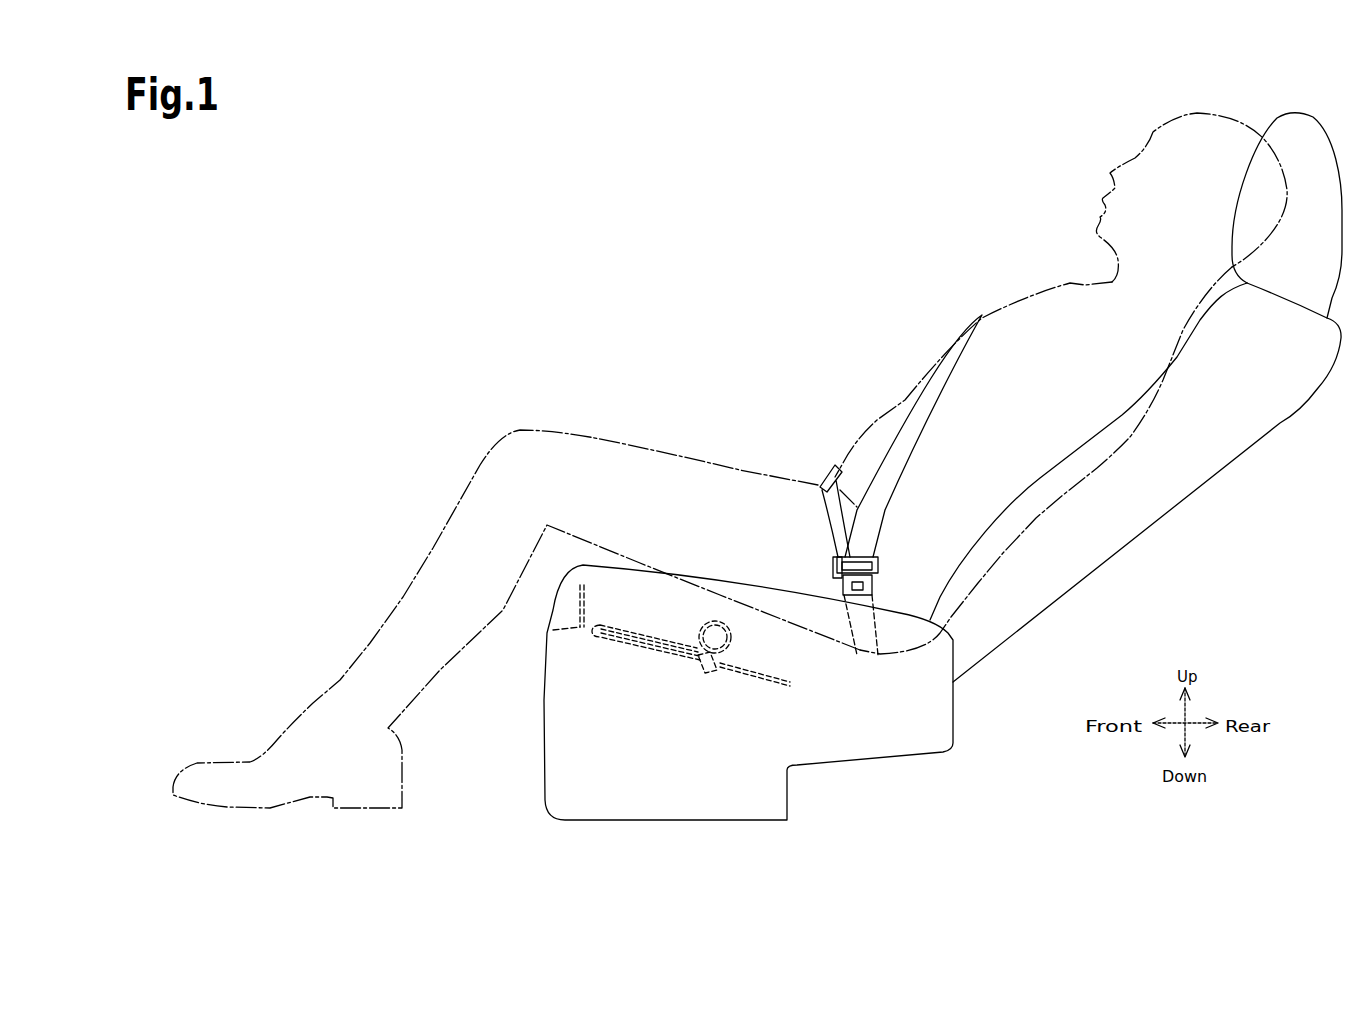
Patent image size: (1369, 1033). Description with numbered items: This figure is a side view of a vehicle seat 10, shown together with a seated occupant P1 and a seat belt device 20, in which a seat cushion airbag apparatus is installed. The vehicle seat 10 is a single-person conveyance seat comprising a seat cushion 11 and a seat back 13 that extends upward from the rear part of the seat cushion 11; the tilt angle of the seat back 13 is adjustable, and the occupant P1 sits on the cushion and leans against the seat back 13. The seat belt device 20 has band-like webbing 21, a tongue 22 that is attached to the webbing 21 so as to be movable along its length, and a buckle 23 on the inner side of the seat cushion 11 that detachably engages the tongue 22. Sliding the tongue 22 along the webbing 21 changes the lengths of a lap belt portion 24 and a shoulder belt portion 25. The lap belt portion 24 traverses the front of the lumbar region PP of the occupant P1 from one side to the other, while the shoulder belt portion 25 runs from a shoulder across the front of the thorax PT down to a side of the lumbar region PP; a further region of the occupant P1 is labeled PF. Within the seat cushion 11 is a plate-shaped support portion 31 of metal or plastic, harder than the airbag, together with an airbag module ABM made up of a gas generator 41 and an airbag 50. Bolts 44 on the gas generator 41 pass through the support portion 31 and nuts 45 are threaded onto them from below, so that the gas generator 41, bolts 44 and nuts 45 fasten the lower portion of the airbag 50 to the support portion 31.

The vehicle seat 10 is at (914, 466).
The seat cushion 11 is at (543, 735).
The seat back 13 is at (1182, 500).
The seat belt device 20 is at (857, 485).
The webbing 21 is at (857, 436).
The tongue 22 is at (878, 562).
The buckle 23 is at (837, 588).
The lap belt portion 24 is at (835, 487).
The shoulder belt portion 25 is at (903, 422).
The support portion 31 is at (580, 627).
The gas generator 41 is at (694, 613).
The bolts 44 is at (700, 672).
The nuts 45 is at (720, 670).
The airbag 50 is at (657, 622).
The airbag module ABM is at (732, 645).
The occupant P1 is at (730, 458).
The thorax PT is at (955, 333).
The thigh of occupant PF is at (687, 458).
The lumbar region PP is at (982, 580).